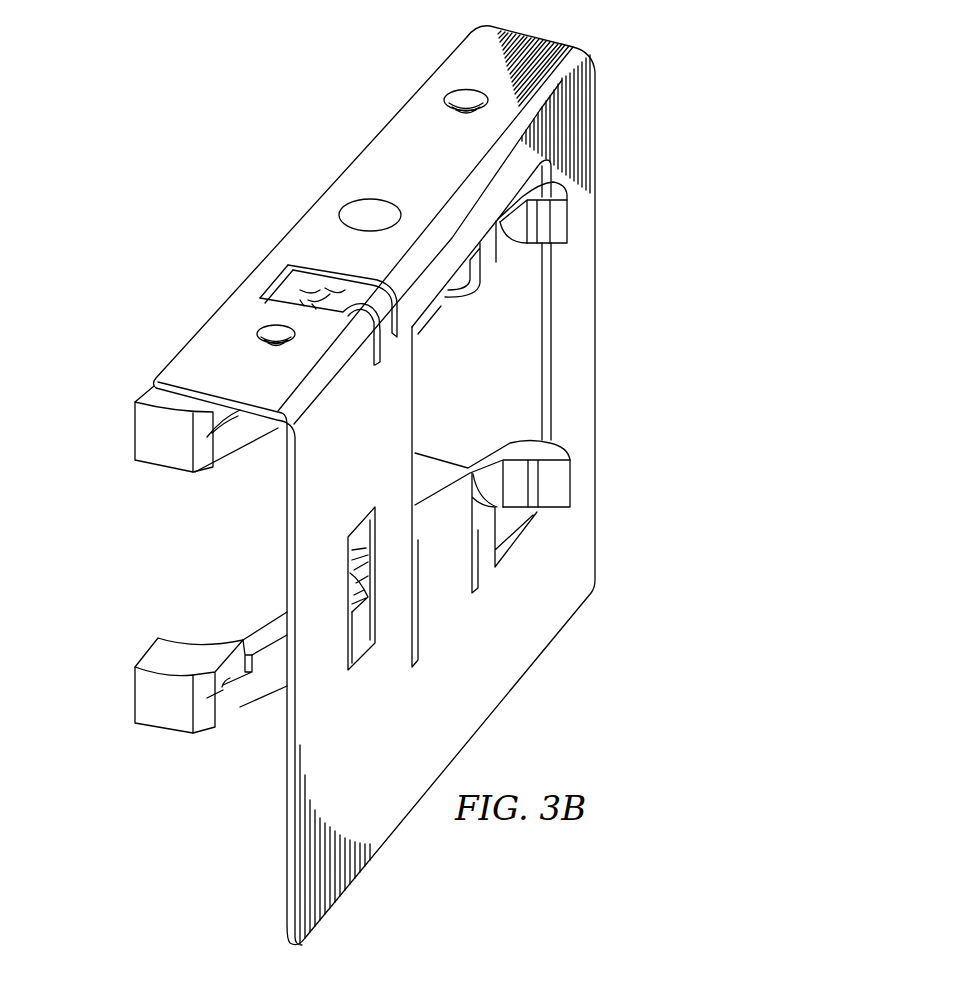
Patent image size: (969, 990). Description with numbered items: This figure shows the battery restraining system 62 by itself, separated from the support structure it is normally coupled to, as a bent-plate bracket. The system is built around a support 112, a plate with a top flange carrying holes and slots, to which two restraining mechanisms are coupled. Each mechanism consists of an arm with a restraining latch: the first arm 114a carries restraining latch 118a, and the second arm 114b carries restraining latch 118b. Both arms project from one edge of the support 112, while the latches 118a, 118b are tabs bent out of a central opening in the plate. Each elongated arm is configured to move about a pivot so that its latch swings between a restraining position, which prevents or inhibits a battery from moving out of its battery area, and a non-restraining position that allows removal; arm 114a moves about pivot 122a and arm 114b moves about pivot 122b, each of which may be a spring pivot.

The battery restraining system 62 is at (104, 590).
The support 112 is at (375, 485).
The arm 114a is at (243, 443).
The arm 114b is at (247, 703).
The restraining latch 118a is at (572, 214).
The restraining latch 118b is at (575, 480).
The pivot 122a is at (313, 292).
The pivot 122b is at (350, 553).